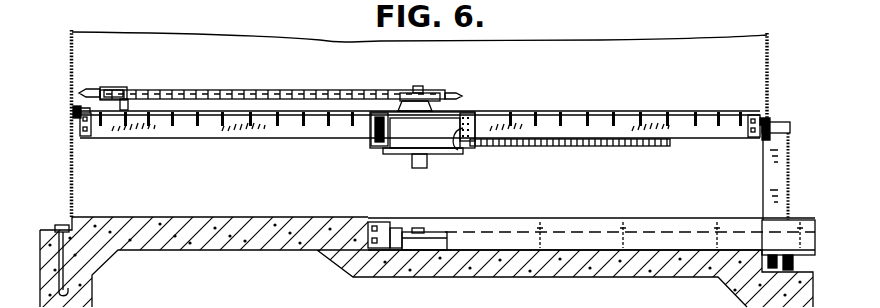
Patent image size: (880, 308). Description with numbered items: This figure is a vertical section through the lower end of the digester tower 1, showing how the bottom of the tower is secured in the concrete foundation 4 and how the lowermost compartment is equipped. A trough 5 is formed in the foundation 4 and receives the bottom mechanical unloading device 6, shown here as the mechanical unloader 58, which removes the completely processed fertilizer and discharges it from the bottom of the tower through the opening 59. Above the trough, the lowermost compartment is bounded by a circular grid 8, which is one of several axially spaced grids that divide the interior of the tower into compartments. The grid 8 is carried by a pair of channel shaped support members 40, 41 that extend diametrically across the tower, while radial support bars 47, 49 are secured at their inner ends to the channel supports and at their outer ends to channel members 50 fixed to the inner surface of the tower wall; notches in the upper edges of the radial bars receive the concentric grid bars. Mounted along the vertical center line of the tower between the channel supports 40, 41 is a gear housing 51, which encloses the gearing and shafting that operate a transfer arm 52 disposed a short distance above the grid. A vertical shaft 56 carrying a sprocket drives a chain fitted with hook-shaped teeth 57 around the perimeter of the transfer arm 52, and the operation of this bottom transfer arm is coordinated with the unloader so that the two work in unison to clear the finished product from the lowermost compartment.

The digester tower 1 is at (66, 62).
The concrete foundation 4 is at (99, 285).
The trough 5 is at (586, 222).
The bottom mechanical unloading device 6 is at (673, 215).
The grid 8 is at (220, 112).
The channel shaped support member 40 is at (463, 143).
The channel shaped support member 41 is at (370, 132).
The radial support bar 47 is at (688, 137).
The radial support bar 49 is at (271, 135).
The channel member 50 is at (72, 107).
The gear housing 51 is at (400, 146).
The transfer arm 52 is at (219, 89).
The vertical shaft 56 is at (420, 86).
The hook-shaped teeth 57 is at (82, 93).
The mechanical unloader 58 is at (524, 228).
The opening 59 is at (768, 241).